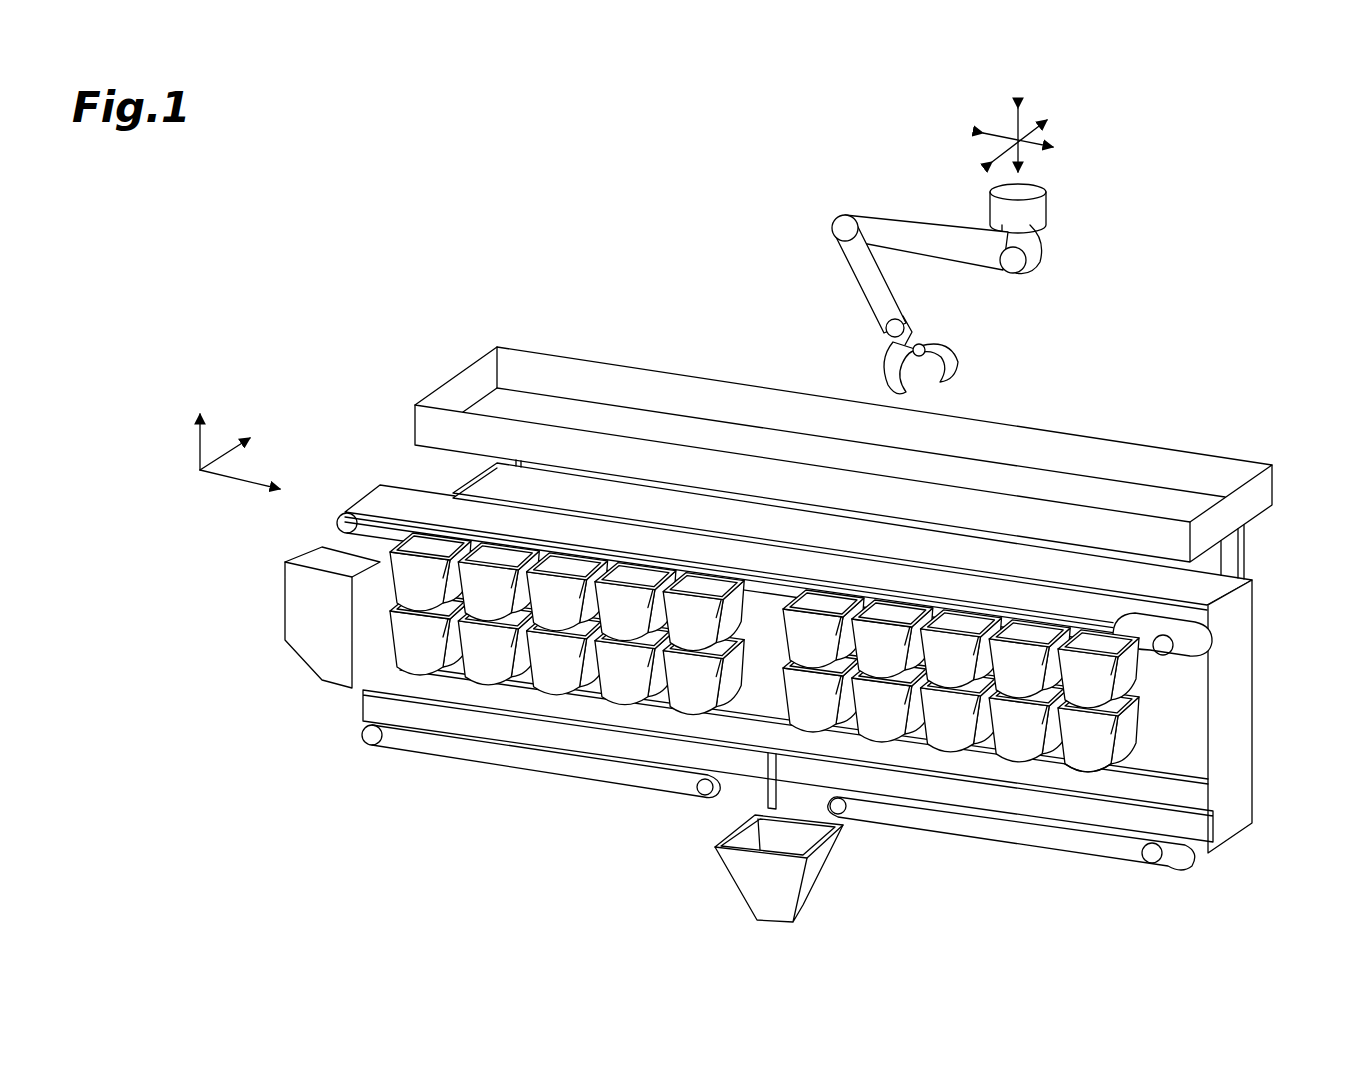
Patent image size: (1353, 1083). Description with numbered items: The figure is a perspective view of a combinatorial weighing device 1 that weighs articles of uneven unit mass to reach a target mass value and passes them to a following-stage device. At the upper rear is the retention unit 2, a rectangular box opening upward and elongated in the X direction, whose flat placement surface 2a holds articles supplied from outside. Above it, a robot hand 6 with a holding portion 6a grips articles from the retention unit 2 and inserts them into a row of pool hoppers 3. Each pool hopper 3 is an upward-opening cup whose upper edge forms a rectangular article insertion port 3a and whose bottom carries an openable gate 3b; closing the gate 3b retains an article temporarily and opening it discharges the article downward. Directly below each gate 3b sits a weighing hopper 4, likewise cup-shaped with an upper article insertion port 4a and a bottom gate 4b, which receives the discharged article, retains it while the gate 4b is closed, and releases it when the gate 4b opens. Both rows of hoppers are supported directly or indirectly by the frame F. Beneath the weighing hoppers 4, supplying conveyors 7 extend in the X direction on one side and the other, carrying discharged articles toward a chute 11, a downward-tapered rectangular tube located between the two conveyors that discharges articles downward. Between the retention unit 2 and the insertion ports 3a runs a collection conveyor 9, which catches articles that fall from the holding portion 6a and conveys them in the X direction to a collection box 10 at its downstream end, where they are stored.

The combinatorial weighing device 1 is at (260, 197).
The retention unit 2 is at (1276, 494).
The placement surface 2a is at (1170, 508).
The pool hopper 3 is at (764, 731).
The article insertion port 3a is at (1185, 627).
The gate 3b is at (948, 660).
The weighing hopper 4 is at (856, 779).
The article insertion port 4a is at (1125, 692).
The gate 4b is at (1082, 752).
The robot hand 6 is at (880, 205).
The holding portion 6a is at (950, 356).
The supplying conveyor 7 is at (365, 737).
The collection conveyor 9 is at (825, 527).
The collection box 10 is at (296, 603).
The chute 11 is at (745, 893).
The frame F is at (1250, 702).